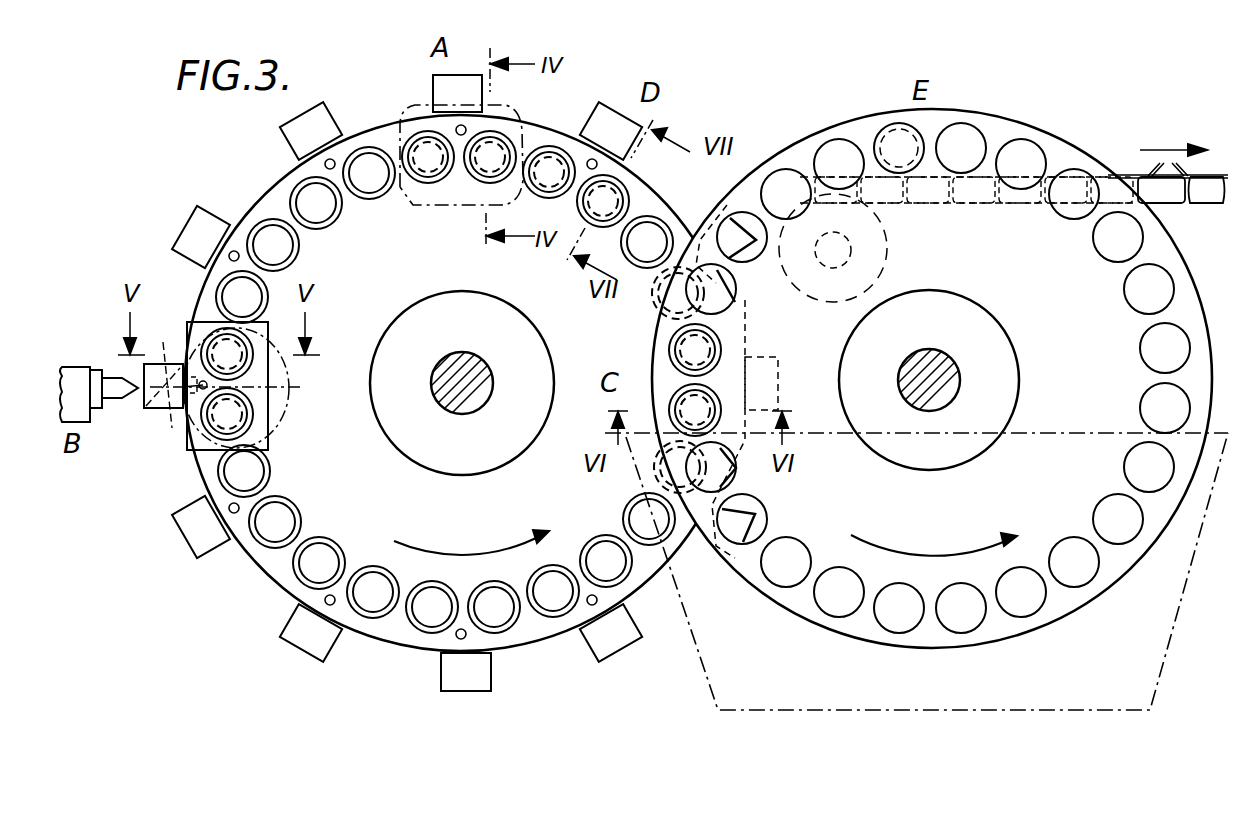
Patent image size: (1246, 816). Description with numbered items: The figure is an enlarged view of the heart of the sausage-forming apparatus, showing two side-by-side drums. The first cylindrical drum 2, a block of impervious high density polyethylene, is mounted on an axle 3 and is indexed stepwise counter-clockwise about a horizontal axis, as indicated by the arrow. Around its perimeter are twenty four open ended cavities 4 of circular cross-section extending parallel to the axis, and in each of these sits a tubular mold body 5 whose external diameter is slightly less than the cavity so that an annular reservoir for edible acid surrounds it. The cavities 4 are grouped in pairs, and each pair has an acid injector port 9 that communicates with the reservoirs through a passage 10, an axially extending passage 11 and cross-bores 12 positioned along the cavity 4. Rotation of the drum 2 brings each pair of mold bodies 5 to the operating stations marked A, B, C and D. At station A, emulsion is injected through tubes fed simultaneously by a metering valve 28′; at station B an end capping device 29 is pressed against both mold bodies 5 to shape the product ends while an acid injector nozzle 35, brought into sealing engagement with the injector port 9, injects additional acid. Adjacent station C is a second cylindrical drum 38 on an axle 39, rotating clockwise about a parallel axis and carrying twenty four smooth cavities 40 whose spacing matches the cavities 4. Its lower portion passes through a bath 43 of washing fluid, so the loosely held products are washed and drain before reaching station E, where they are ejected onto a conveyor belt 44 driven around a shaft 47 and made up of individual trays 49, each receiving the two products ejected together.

The cylindrical drum 2 is at (265, 583).
The axle 3 is at (446, 398).
The cavities 4 is at (262, 240).
The mold body 5 is at (240, 296).
The acid injector port 9 is at (158, 409).
The passage 10 is at (170, 364).
The axially extending passage 11 is at (186, 420).
The cross-bores 12 is at (244, 388).
The metering valve 28′ is at (502, 118).
The end capping device 29 is at (201, 454).
The acid injector nozzle 35 is at (117, 398).
The second cylindrical drum 38 is at (1003, 130).
The axle 39 is at (937, 356).
The cavities 40 is at (895, 618).
The bath 43 is at (700, 640).
The conveyor belt 44 is at (1118, 162).
The shaft 47 is at (850, 253).
The trays 49 is at (1096, 170).